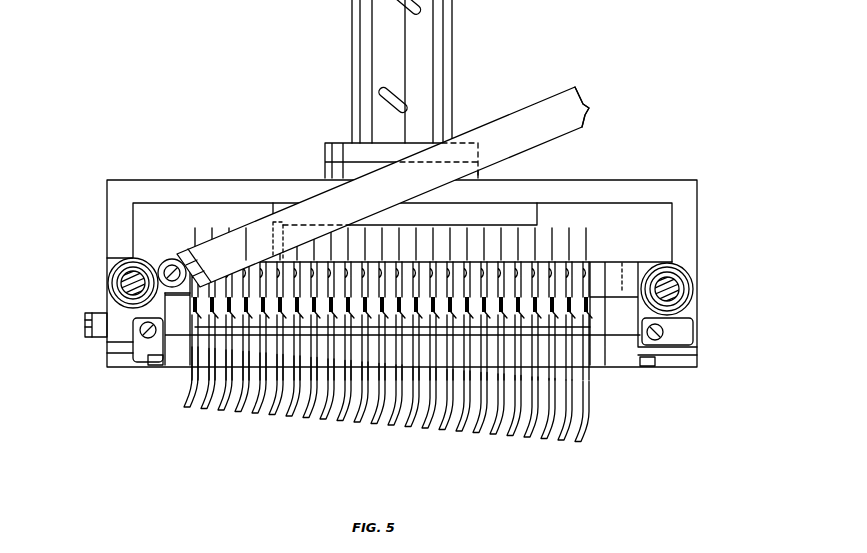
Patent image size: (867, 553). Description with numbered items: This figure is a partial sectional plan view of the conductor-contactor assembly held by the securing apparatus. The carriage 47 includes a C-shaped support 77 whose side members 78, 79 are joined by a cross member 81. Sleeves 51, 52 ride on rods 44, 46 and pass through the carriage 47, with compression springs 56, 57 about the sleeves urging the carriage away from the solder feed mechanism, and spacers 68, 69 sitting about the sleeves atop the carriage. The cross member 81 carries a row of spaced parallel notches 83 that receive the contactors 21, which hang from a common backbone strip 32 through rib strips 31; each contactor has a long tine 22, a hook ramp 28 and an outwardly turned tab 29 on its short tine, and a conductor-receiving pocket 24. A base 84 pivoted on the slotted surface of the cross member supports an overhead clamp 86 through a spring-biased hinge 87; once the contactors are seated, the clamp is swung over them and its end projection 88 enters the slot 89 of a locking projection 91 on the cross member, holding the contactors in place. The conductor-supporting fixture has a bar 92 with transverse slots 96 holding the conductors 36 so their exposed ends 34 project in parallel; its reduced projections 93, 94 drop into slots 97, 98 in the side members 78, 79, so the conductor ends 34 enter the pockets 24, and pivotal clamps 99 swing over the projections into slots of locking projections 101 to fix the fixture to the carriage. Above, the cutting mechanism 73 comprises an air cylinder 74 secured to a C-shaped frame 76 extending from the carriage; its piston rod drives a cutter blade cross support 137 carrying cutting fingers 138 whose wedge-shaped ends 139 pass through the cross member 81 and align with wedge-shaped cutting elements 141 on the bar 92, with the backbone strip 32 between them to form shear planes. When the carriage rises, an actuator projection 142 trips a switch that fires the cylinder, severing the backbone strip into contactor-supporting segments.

The contactors 21 is at (557, 244).
The long tine 22 is at (574, 242).
The conductor-receiving pocket 24 is at (590, 312).
The hook ramp 28 is at (590, 258).
The outwardly turned tab 29 is at (600, 316).
The rib strip 31 is at (593, 326).
The backbone strip 32 is at (580, 330).
The exposed ends 34 is at (172, 347).
The conductors 36 is at (570, 430).
The rod 44 is at (676, 285).
The rod 46 is at (126, 292).
The carriage 47 is at (80, 402).
The sleeve 51 is at (673, 273).
The sleeve 52 is at (120, 277).
The compression spring 56 is at (684, 308).
The compression spring 57 is at (118, 268).
The spacer 68 is at (682, 297).
The spacer 69 is at (117, 289).
The cutting mechanism 73 is at (550, 170).
The air cylinder 74 is at (440, 42).
The C-shaped frame 76 is at (683, 186).
The C-shaped support 77 is at (690, 334).
The side member 78 is at (700, 327).
The side member 79 is at (85, 320).
The cross member 81 is at (190, 280).
The notches 83 is at (614, 263).
The base 84 is at (171, 259).
The overhead clamp 86 is at (399, 183).
The spring-biased hinge 87 is at (190, 248).
The projection 88 is at (587, 97).
The slot 89 is at (623, 263).
The locking projection 91 is at (672, 258).
The bar 92 is at (578, 352).
The reduced projection 93 is at (690, 356).
The reduced projection 94 is at (108, 350).
The transverse slots 96 is at (602, 362).
The slot 97 is at (692, 364).
The slot 98 is at (108, 358).
The pivotal clamps 99 is at (146, 357).
The locking projections 101 is at (155, 370).
The cutter blade cross support 137 is at (508, 200).
The cutting fingers 138 is at (272, 230).
The wedge-shaped ends 139 is at (272, 252).
The wedge-shaped cutting elements 141 is at (388, 336).
The actuator projection 142 is at (88, 332).